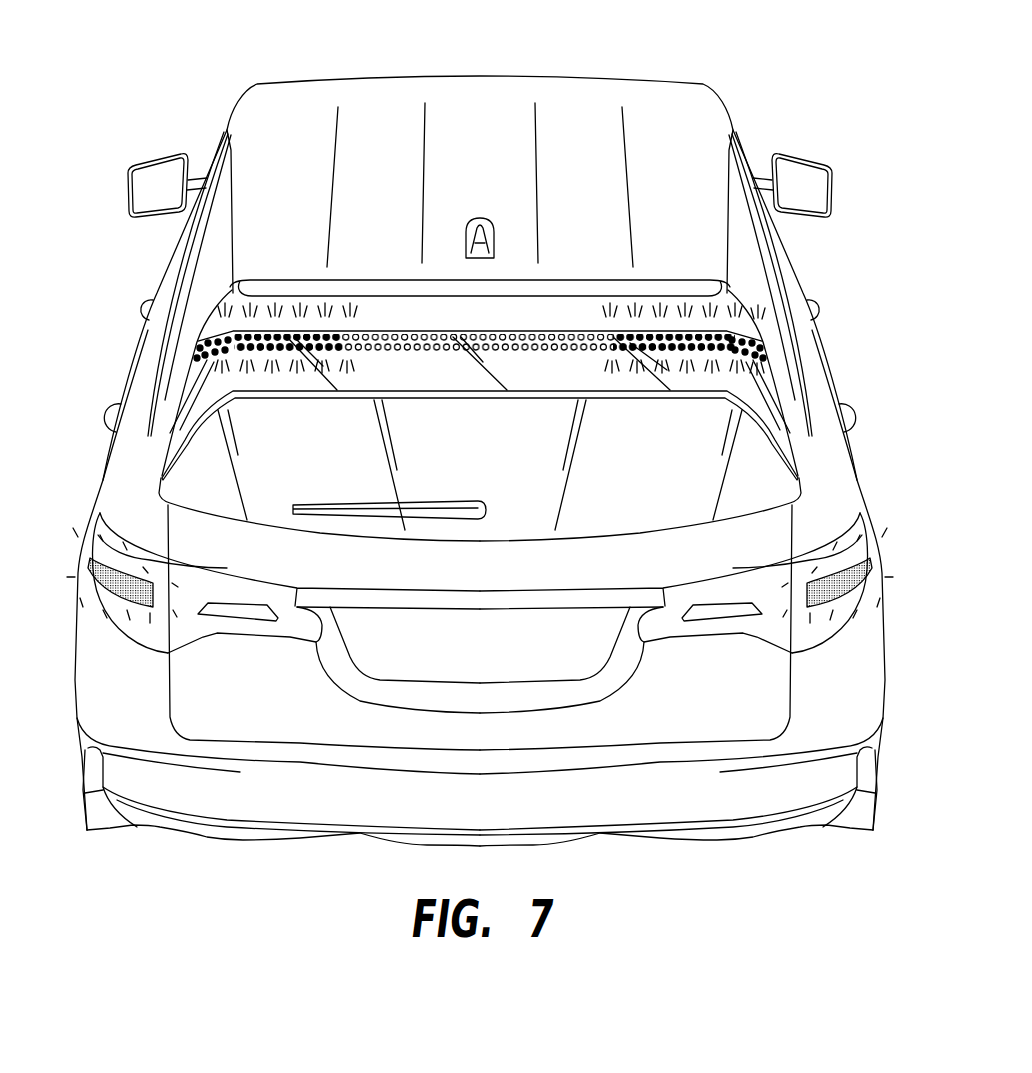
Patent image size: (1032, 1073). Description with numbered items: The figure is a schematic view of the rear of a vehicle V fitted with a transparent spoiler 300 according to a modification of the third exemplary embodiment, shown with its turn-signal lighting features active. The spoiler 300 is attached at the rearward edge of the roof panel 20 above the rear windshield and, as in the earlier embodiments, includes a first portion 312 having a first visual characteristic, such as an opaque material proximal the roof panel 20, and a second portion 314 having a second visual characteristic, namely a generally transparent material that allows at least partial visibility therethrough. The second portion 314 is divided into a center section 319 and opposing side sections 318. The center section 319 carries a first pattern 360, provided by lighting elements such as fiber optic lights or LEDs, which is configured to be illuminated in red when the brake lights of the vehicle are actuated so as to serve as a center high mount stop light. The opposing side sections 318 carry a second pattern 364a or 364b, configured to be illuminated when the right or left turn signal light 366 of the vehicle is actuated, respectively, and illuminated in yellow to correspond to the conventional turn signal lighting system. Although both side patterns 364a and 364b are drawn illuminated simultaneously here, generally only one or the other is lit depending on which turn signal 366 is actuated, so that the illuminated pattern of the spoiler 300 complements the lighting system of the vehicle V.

The vehicle V is at (484, 58).
The roof panel 20 is at (290, 127).
The transparent spoiler 300 is at (764, 307).
The first portion 312 is at (662, 312).
The second portion 314 is at (552, 373).
The opposing side sections 318 is at (203, 410).
The center section 319 is at (447, 360).
The first pattern 360 is at (553, 333).
The second pattern 364a is at (233, 332).
The second pattern 364b is at (760, 333).
The turn signal light 366 is at (103, 577).